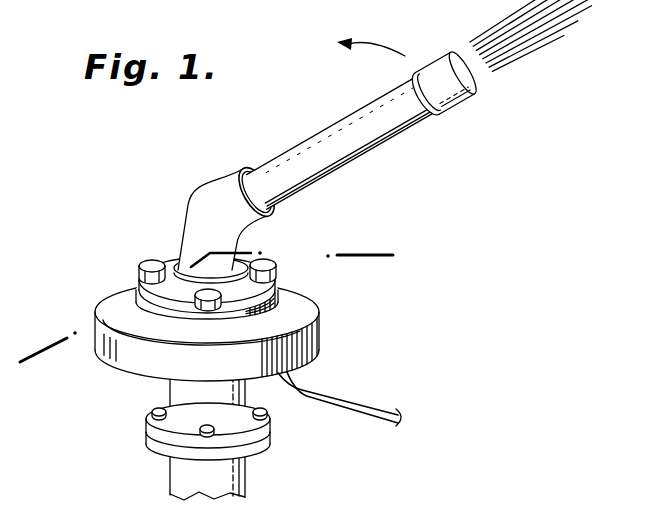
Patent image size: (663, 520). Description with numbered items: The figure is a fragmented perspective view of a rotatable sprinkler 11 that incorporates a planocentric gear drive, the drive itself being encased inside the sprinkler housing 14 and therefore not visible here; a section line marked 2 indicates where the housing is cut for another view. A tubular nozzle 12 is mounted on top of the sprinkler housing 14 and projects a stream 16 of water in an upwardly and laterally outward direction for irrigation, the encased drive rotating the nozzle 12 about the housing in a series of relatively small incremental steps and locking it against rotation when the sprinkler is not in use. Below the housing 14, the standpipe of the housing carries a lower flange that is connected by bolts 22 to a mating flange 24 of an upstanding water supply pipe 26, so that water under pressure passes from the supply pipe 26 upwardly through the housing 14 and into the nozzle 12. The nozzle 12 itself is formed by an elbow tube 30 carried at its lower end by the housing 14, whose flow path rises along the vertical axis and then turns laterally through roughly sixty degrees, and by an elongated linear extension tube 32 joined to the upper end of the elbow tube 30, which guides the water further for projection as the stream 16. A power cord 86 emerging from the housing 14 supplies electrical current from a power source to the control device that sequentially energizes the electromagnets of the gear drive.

The rotatable sprinkler 11 is at (342, 251).
The tubular nozzle 12 is at (357, 134).
The sprinkler housing 14 is at (336, 350).
The water stream 16 is at (546, 41).
The bolts 22 is at (180, 452).
The mating flange 24 is at (190, 452).
The water supply pipe 26 is at (241, 487).
The elbow tube 30 is at (213, 209).
The linear extension tube 32 is at (376, 156).
The power cord 86 is at (352, 407).
The section line 2- 2 is at (376, 269).